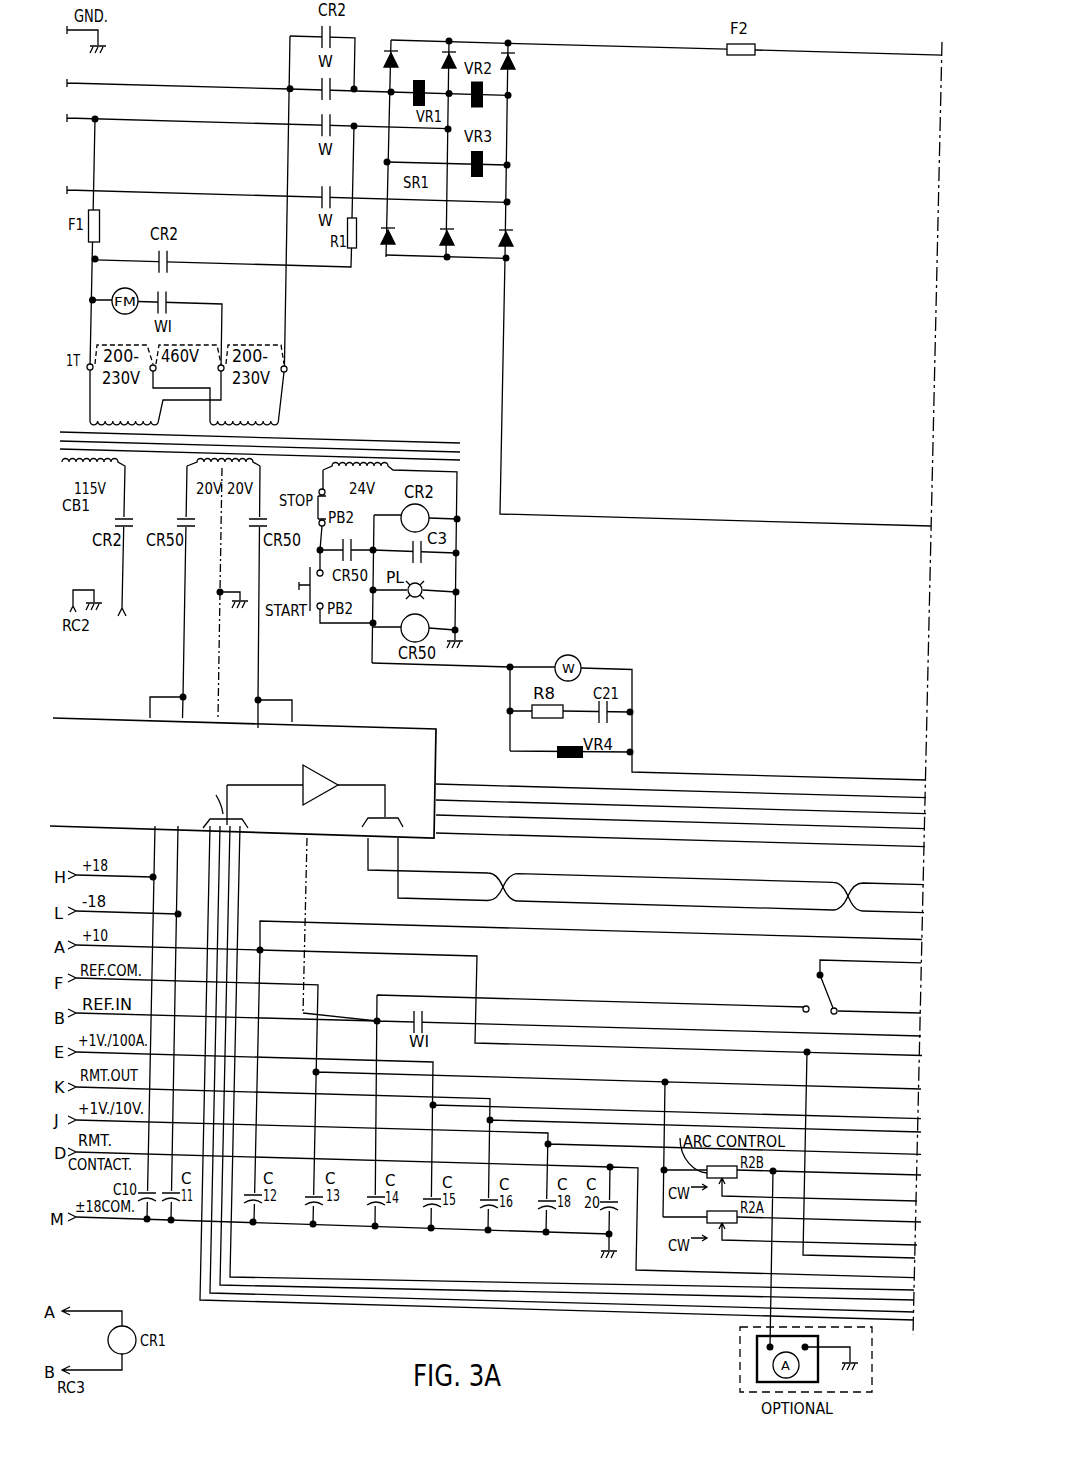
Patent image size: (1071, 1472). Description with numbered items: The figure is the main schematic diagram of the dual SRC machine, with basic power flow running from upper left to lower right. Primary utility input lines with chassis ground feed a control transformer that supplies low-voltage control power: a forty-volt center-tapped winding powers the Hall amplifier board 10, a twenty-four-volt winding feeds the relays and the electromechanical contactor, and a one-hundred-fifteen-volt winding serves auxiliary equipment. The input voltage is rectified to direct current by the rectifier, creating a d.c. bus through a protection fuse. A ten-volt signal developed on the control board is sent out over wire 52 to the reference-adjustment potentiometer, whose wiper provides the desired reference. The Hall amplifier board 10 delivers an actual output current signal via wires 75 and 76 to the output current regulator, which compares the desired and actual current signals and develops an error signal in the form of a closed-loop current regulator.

The Hall amplifier board 10 is at (94, 717).
The wire 52 is at (904, 1058).
The wire 75 is at (558, 873).
The wire 76 is at (558, 907).